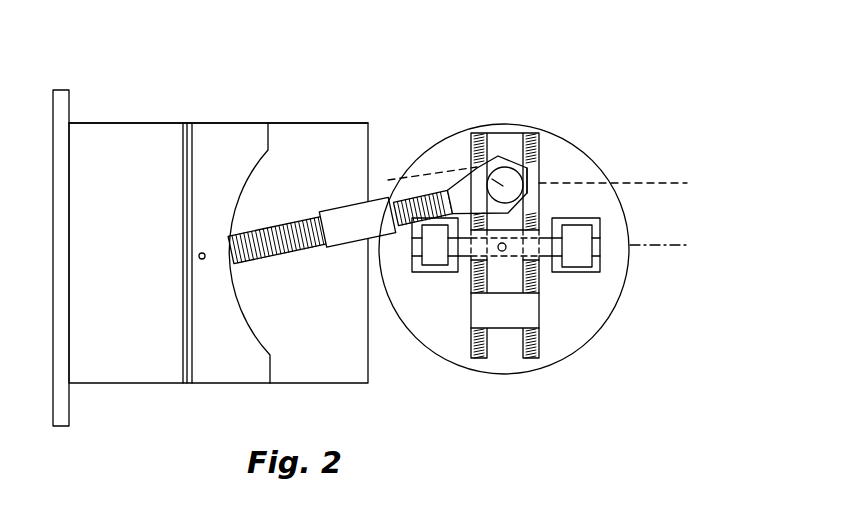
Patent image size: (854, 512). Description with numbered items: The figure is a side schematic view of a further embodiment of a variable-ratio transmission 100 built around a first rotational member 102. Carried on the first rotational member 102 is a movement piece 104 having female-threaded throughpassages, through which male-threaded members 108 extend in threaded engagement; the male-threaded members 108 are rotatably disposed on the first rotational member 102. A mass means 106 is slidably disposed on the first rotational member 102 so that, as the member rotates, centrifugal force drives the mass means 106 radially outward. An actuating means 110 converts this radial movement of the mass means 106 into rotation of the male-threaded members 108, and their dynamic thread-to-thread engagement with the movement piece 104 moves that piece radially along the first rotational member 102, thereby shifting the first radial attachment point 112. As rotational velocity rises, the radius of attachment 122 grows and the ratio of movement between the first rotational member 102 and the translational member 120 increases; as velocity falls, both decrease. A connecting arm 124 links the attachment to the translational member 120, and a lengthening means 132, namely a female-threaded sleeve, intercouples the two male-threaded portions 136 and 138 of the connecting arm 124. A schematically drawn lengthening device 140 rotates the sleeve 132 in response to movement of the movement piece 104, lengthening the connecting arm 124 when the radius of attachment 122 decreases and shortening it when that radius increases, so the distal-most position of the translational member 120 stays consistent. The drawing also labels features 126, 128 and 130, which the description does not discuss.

The transmission 100 is at (407, 66).
The first rotational member 102 is at (574, 165).
The movement piece 104 is at (538, 175).
The mass means 106 is at (437, 258).
The male-threaded members 108 is at (518, 143).
The actuating means 110 is at (543, 258).
The first radial attachment point 112 is at (476, 167).
The translational member 120 is at (225, 143).
The radius of attachment 122 is at (692, 183).
The connecting arm 124 is at (315, 280).
The housing top wall 126 is at (313, 125).
The mounting plate 128 is at (68, 108).
The pivot pin 130 is at (502, 251).
The lengthening means 132 is at (343, 215).
The male-threaded portion 136 is at (240, 264).
The male-threaded portion 138 is at (405, 226).
The lengthening device 140 is at (385, 185).